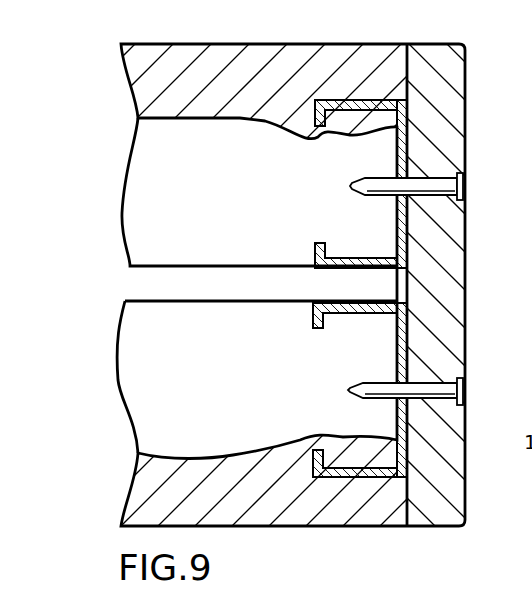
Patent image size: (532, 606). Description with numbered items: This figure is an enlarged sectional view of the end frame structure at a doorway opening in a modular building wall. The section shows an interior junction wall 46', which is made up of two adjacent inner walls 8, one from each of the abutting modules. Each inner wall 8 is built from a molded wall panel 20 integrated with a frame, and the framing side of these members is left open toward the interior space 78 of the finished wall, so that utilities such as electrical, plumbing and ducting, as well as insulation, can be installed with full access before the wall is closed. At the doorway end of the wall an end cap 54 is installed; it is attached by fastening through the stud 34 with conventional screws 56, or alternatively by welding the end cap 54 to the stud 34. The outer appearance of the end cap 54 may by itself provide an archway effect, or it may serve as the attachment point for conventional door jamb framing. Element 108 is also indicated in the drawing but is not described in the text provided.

The wall panel 20 is at (257, 44).
The end cap 54 is at (467, 244).
The stud 34 is at (397, 221).
The screw 56 is at (440, 181).
The interior space 78 is at (262, 295).
The inner wall 8 is at (112, 43).
The interior junction wall 46' is at (44, 285).
The element 108 is at (531, 580).